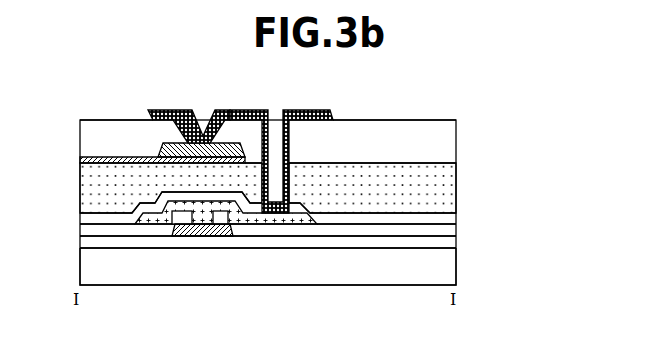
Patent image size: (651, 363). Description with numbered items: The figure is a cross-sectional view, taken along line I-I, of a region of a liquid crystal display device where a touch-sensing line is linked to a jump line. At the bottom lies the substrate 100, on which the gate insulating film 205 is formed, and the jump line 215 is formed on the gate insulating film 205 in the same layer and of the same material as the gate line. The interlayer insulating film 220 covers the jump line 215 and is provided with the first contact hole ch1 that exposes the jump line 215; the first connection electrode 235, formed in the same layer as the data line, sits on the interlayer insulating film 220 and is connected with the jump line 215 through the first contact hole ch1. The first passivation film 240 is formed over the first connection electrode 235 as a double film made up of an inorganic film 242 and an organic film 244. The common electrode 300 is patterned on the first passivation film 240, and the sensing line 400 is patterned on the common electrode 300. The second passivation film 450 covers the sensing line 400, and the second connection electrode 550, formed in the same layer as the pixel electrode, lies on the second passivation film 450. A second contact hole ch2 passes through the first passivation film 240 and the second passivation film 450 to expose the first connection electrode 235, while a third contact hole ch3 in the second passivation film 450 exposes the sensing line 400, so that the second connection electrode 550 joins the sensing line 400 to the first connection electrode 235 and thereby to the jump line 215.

The substrate 100 is at (456, 267).
The gate insulating film 205 is at (456, 243).
The jump line 215 is at (203, 237).
The interlayer insulating film 220 is at (456, 231).
The first connection electrode 235 is at (152, 224).
The first passivation film 240 is at (532, 177).
The inorganic film 242 is at (456, 218).
The organic film 244 is at (456, 177).
The common electrode 300 is at (109, 160).
The sensing line 400 is at (204, 136).
The second passivation film 450 is at (456, 145).
The second connection electrode 550 is at (240, 110).
The first contact hole ch1 is at (212, 221).
The second contact hole ch2 is at (291, 145).
The third contact hole ch3 is at (175, 118).